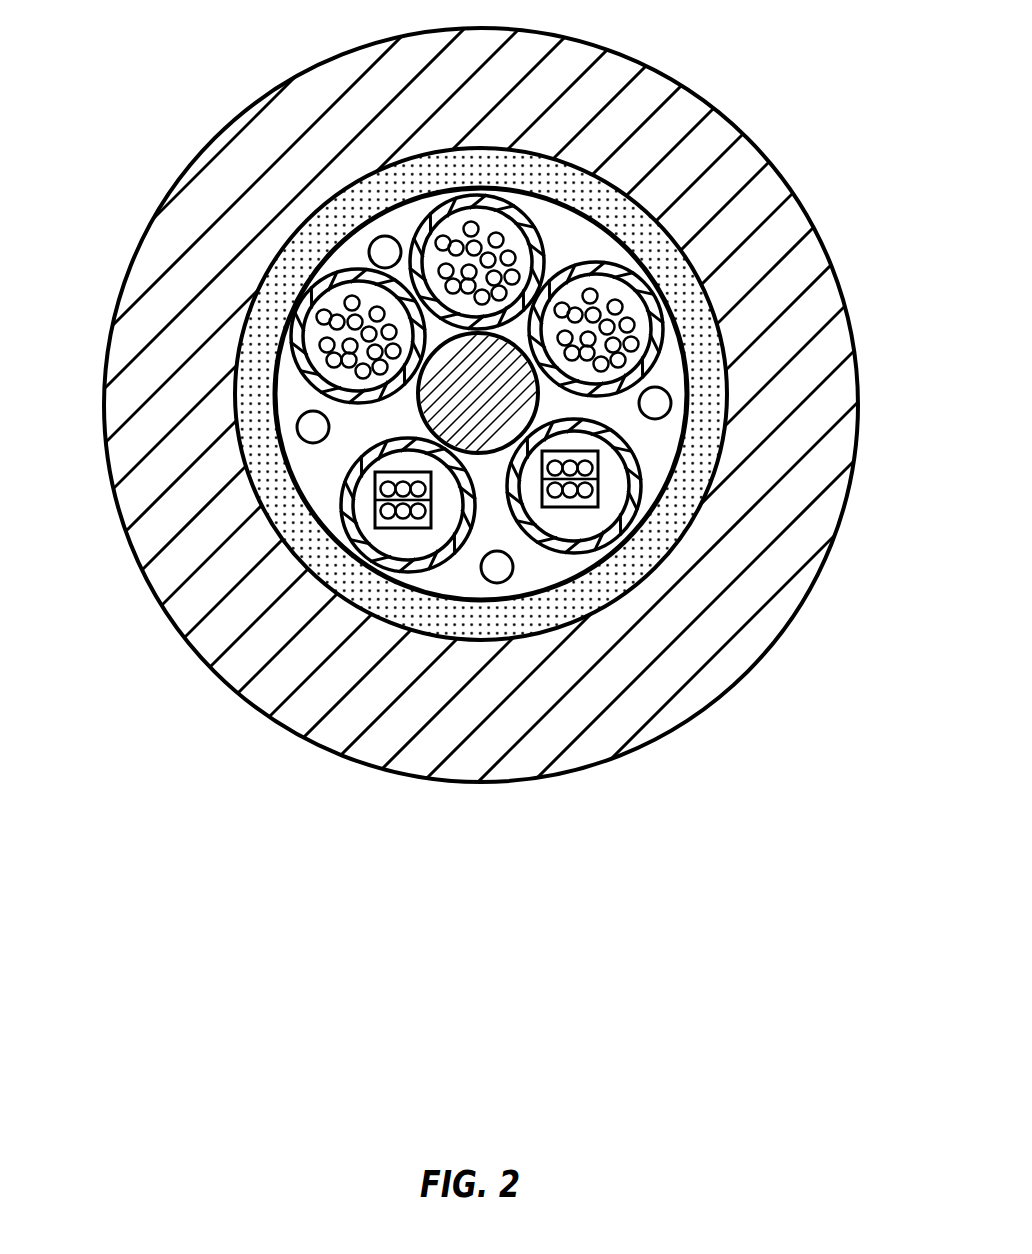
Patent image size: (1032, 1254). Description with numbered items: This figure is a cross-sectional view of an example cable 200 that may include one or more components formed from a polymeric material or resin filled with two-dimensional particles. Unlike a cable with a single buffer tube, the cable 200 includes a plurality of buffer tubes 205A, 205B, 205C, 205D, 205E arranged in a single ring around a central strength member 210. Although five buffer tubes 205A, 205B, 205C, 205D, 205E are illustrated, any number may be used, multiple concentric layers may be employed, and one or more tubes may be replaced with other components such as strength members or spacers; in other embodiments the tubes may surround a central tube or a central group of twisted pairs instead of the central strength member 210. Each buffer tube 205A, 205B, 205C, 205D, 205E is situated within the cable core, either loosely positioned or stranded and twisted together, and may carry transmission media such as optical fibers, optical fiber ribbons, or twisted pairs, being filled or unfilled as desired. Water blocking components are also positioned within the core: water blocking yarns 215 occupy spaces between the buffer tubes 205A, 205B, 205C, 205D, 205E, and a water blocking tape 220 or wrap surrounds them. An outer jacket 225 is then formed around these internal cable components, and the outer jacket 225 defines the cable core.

The cable 200 is at (516, 500).
The buffer tube 205A is at (488, 222).
The buffer tube 205B is at (608, 292).
The buffer tube 205C is at (640, 503).
The buffer tube 205D is at (337, 490).
The buffer tube 205E is at (287, 349).
The central strength member 210 is at (485, 397).
The water blocking yarns 215 is at (370, 249).
The water blocking tape 220 is at (638, 567).
The outer jacket 225 is at (617, 713).